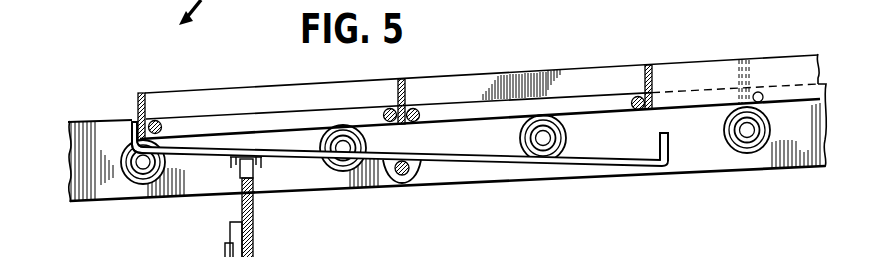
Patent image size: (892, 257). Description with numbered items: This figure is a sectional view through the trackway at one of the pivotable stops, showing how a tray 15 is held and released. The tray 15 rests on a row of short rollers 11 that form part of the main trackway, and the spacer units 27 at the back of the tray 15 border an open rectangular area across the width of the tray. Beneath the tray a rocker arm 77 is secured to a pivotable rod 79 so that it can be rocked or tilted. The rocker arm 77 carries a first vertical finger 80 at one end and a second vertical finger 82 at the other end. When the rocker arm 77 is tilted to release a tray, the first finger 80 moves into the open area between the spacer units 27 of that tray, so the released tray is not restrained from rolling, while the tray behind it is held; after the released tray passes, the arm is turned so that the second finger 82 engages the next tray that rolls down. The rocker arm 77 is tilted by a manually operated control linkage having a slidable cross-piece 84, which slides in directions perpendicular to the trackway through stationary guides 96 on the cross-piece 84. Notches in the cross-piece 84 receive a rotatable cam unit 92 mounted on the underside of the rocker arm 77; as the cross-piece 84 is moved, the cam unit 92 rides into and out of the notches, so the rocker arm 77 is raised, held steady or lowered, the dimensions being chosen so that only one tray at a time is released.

The short rollers 11 is at (743, 168).
The modular tray 15 is at (476, 70).
The spacer units 27 is at (688, 60).
The rocker arm 77 is at (589, 164).
The pivotable rod 79 is at (408, 184).
The first vertical finger 80 is at (673, 137).
The second vertical finger 82 is at (131, 123).
The slidable cross-piece 84 is at (254, 237).
The rotatable cam unit 92 is at (251, 179).
The stationary guide 96 is at (231, 226).